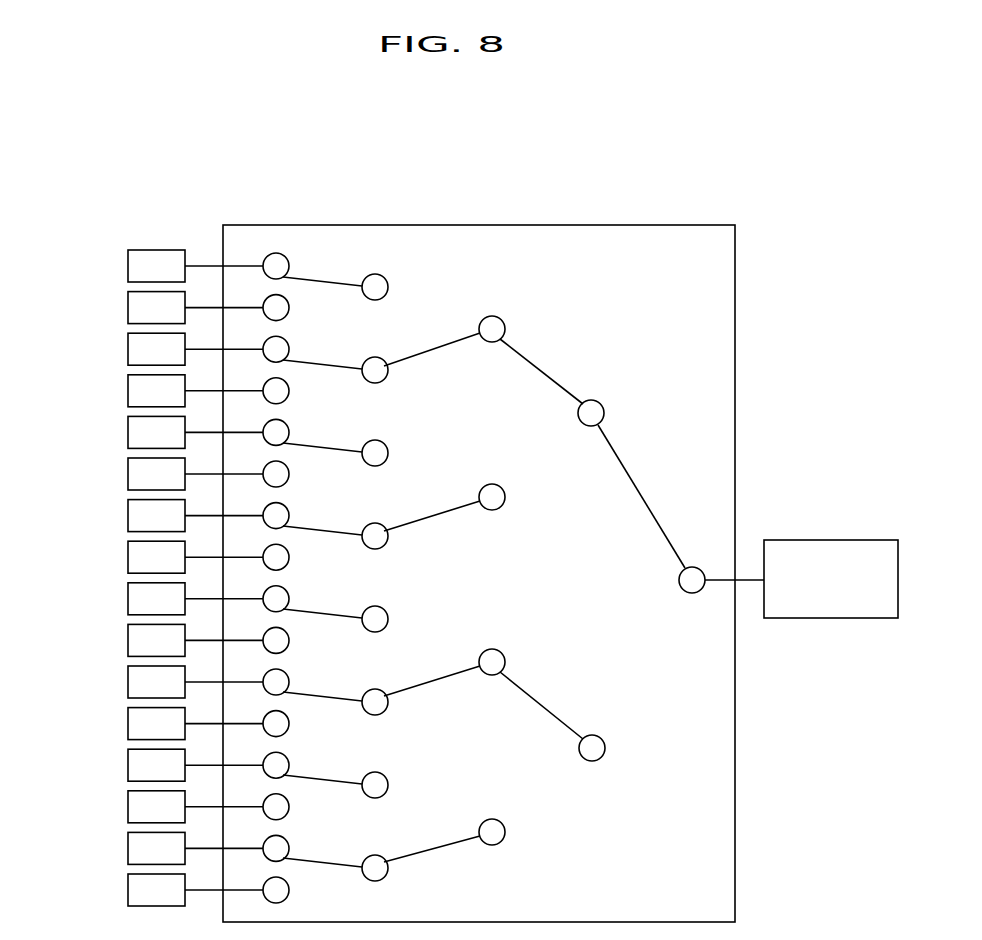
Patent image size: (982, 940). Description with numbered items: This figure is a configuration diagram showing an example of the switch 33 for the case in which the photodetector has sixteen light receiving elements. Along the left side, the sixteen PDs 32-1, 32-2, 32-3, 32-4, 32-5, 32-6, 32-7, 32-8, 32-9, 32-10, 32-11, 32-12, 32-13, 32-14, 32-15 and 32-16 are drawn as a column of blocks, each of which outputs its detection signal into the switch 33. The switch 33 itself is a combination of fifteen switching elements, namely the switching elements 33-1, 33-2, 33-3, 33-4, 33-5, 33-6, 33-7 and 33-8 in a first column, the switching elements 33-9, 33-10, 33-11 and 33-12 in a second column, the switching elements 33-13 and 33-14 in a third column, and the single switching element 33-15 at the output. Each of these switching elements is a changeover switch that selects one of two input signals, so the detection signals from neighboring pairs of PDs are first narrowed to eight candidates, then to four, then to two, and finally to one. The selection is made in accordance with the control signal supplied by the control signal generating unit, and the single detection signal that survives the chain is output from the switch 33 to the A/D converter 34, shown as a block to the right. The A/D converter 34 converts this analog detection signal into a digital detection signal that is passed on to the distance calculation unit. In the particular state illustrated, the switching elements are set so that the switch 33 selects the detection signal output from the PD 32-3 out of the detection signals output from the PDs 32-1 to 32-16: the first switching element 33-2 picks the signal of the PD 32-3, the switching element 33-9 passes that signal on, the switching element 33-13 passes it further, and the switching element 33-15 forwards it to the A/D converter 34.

The light receiving element (PD) 32-1 is at (125, 266).
The light receiving element (PD) 32-2 is at (125, 308).
The light receiving element (PD) 32-3 is at (125, 349).
The light receiving element (PD) 32-4 is at (125, 391).
The light receiving element (PD) 32-5 is at (125, 432).
The light receiving element (PD) 32-6 is at (125, 474).
The light receiving element (PD) 32-7 is at (125, 516).
The light receiving element (PD) 32-8 is at (125, 557).
The light receiving element (PD) 32-9 is at (125, 599).
The light receiving element (PD) 32-10 is at (125, 640).
The light receiving element (PD) 32-11 is at (125, 682).
The light receiving element (PD) 32-12 is at (125, 724).
The light receiving element (PD) 32-13 is at (125, 765).
The light receiving element (PD) 32-14 is at (125, 807).
The light receiving element (PD) 32-15 is at (125, 848).
The light receiving element (PD) 32-16 is at (125, 890).
The switch 33 is at (738, 900).
The switching element 33-1 is at (320, 280).
The switching element 33-2 is at (320, 363).
The switching element 33-3 is at (320, 446).
The switching element 33-4 is at (320, 529).
The switching element 33-5 is at (320, 612).
The switching element 33-6 is at (320, 695).
The switching element 33-7 is at (320, 778).
The switching element 33-8 is at (320, 861).
The switching element 33-9 is at (421, 346).
The switching element 33-10 is at (427, 512).
The switching element 33-11 is at (418, 678).
The switching element 33-12 is at (421, 847).
The switching element 33-13 is at (522, 364).
The switching element 33-14 is at (536, 712).
The switching element 33-15 is at (617, 472).
The A/D converter 34 is at (791, 539).